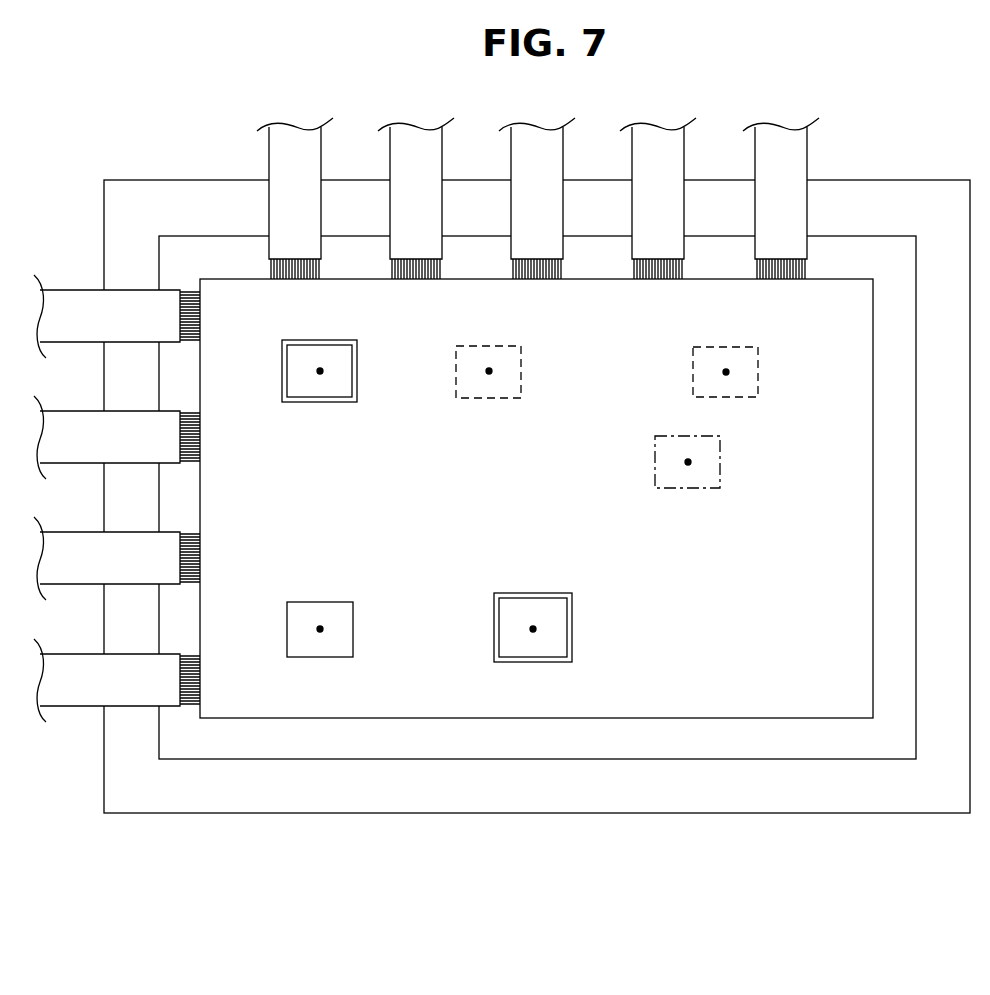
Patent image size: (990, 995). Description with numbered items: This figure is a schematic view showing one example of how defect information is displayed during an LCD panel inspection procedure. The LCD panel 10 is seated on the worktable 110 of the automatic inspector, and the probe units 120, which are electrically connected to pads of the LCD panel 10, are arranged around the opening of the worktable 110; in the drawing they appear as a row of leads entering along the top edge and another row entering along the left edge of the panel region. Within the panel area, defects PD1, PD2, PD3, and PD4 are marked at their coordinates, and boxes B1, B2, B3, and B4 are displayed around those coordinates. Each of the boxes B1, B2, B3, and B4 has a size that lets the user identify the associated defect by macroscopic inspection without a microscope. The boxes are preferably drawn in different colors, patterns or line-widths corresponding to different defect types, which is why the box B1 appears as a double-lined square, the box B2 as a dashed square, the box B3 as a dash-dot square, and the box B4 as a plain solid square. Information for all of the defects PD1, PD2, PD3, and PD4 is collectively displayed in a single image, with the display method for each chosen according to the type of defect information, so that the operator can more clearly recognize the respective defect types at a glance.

The LCD panel 10 is at (399, 737).
The worktable 110 is at (559, 796).
The probe units 120 is at (281, 160).
The defect PD1 is at (320, 373).
The defect PD2 is at (489, 373).
The defect PD3 is at (688, 464).
The defect PD4 is at (320, 627).
The box B1 is at (350, 403).
The box B2 is at (515, 399).
The box B3 is at (715, 489).
The box B4 is at (353, 633).